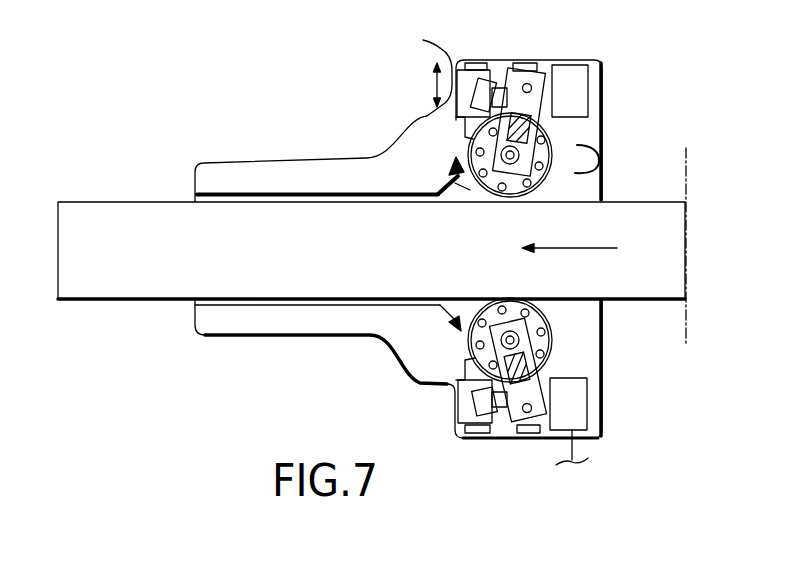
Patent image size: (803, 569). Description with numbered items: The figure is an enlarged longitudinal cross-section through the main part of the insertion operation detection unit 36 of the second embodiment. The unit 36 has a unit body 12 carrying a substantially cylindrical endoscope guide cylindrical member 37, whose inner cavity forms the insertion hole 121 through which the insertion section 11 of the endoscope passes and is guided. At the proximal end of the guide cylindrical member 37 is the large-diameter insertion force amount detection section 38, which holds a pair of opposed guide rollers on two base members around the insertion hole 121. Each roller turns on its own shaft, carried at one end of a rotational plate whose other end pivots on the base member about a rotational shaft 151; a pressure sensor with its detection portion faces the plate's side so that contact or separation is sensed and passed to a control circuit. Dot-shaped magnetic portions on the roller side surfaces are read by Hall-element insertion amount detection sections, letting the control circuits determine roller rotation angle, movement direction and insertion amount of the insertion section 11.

The insertion section 11 is at (105, 202).
The unit body 12 is at (340, 158).
The insertion hole 121 is at (265, 200).
The rotational shaft 151 is at (530, 82).
The insertion operation detection unit 36 is at (259, 366).
The endoscope guide cylindrical member 37 is at (211, 337).
The insertion force amount detection section 38 is at (598, 60).